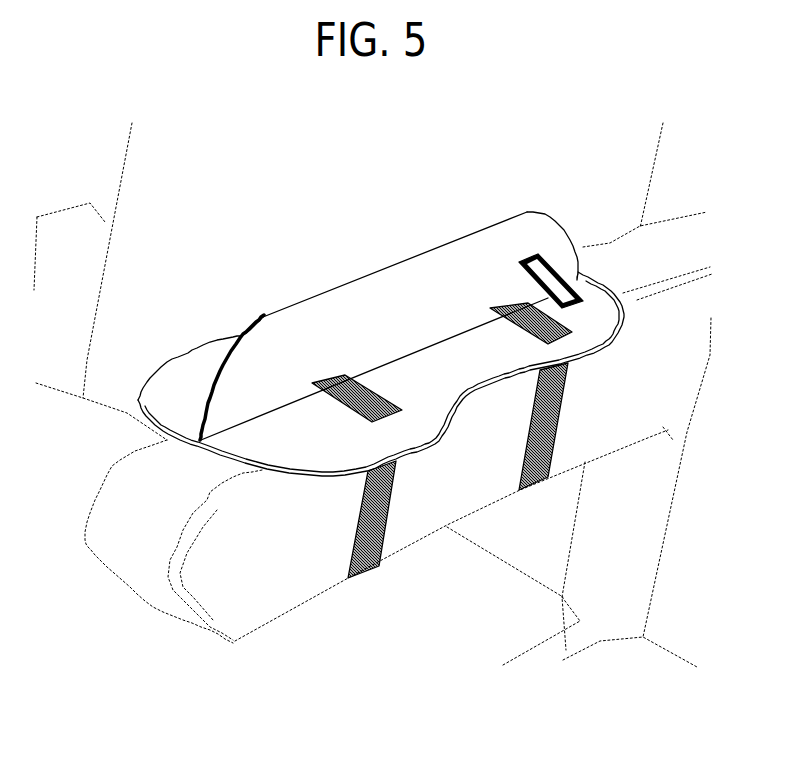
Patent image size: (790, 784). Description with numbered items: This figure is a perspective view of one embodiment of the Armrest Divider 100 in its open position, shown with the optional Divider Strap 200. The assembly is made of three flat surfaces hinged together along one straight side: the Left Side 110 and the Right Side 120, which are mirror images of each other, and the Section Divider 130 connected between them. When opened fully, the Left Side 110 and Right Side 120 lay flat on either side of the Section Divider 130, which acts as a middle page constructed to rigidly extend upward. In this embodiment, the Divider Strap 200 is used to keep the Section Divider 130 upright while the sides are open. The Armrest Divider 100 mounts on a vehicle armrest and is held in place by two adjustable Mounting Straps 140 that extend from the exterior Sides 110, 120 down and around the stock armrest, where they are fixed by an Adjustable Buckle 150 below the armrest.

The armrest divider 100 is at (373, 395).
The left side 110 is at (410, 374).
The right side 120 is at (209, 329).
The section divider 130 is at (326, 268).
The mounting strap 140 is at (345, 535).
The adjustable buckle 150 is at (190, 458).
The divider strap 200 is at (558, 238).